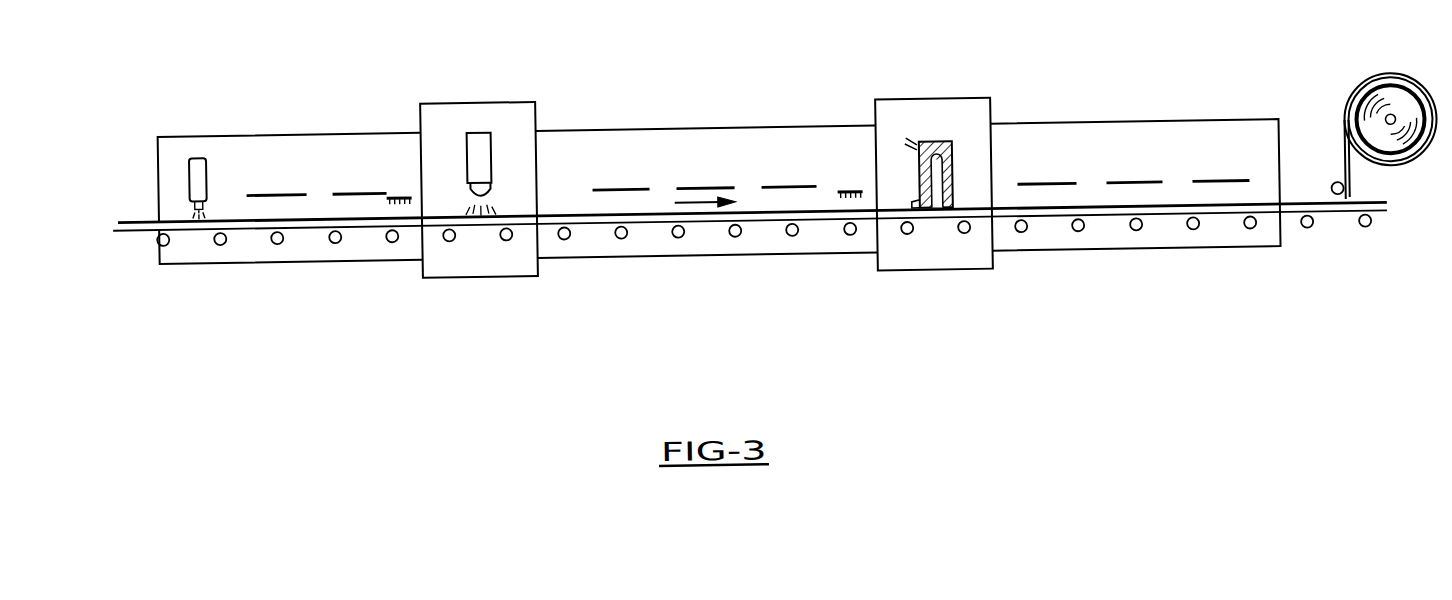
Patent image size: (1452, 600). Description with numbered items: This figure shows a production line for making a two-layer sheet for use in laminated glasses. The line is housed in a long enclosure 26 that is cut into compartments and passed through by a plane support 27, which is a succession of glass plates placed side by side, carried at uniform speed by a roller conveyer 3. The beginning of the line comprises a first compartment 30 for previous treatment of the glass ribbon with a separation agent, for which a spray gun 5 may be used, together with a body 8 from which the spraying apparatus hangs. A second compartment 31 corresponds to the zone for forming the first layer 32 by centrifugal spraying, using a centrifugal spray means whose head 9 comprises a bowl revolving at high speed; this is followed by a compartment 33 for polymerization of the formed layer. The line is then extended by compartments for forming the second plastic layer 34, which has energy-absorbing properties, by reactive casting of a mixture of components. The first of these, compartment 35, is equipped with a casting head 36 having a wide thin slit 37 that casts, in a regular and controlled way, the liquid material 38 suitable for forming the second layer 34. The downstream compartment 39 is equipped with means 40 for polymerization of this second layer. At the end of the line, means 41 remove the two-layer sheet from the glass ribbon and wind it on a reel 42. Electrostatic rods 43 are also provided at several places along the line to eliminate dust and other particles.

The roller conveyer 3 is at (342, 244).
The spray gun 5 is at (199, 182).
The spray device body 8 is at (483, 150).
The head 9 is at (475, 193).
The long enclosure 26 is at (717, 62).
The plane support 27 is at (297, 233).
The first compartment 30 is at (312, 151).
The second compartment 31 is at (516, 120).
The first layer 32 is at (566, 208).
The polymerization compartment 33 is at (765, 150).
The second plastic layer 34 is at (1090, 205).
The first casting compartment 35 is at (935, 125).
The casting head 36 is at (945, 155).
The wide thin slit 37 is at (917, 192).
The liquid material 38 is at (934, 226).
The downstream compartment 39 is at (1197, 150).
The polymerization means 40 is at (1205, 197).
The removal means 41 is at (1335, 200).
The reel 42 is at (1403, 55).
The electrostatic rods 43 is at (400, 201).